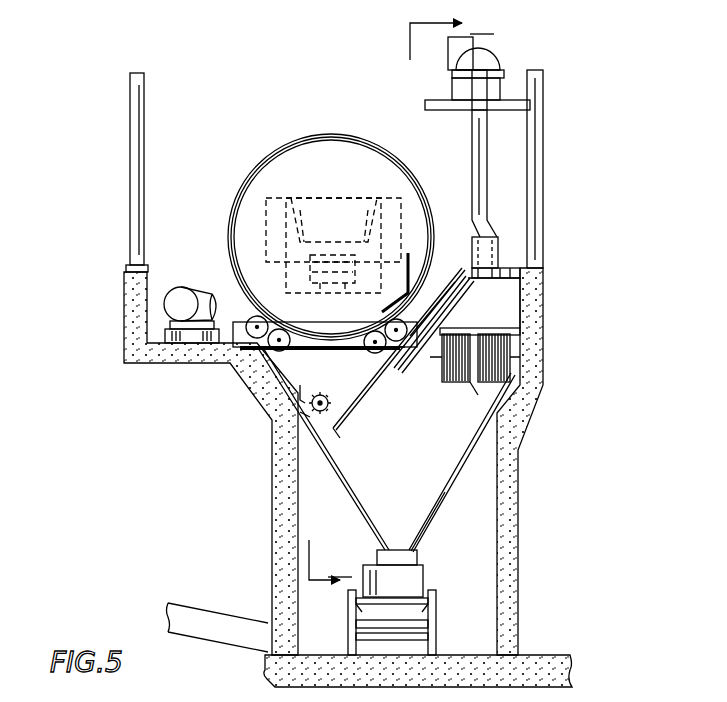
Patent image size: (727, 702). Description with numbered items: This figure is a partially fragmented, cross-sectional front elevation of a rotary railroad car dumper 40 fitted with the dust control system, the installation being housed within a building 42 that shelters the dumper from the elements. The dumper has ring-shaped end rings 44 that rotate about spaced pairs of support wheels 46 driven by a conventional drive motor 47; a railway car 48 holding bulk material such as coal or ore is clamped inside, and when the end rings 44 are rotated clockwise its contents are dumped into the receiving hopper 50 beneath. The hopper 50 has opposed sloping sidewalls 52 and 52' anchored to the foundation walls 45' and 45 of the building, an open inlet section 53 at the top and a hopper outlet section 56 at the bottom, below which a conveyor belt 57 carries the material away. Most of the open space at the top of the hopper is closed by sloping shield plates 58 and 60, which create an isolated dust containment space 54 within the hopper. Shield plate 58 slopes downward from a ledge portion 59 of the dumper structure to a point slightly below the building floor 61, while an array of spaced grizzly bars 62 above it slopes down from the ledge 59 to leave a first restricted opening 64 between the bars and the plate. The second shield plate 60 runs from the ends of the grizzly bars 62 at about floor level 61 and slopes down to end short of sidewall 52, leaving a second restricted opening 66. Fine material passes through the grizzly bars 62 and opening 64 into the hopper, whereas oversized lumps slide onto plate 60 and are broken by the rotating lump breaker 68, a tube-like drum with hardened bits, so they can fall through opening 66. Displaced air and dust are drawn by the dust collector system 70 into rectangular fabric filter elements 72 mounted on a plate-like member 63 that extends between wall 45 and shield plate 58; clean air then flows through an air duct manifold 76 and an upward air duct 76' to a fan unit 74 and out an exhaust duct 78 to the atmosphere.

The rotary railroad car dumper 40 is at (276, 160).
The building 42 is at (126, 165).
The end rings 44 is at (295, 140).
The foundation wall 45 is at (425, 477).
The foundation wall 45' is at (211, 463).
The support wheels 46 is at (242, 312).
The drive motor 47 is at (181, 287).
The railway car 48 is at (338, 205).
The receiving hopper 50 is at (448, 507).
The sloping sidewall 52 is at (323, 448).
The sloping sidewall 52' is at (494, 462).
The open inlet section 53 is at (356, 391).
The dust containment space 54 is at (421, 468).
The hopper outlet section 56 is at (403, 573).
The conveyor belt 57 is at (358, 582).
The shield plate 58 is at (400, 368).
The ledge portion 59 is at (527, 268).
The second shield plate 60 is at (348, 412).
The building floor 61 is at (306, 348).
The grizzly bars 62 is at (468, 279).
The plate-like member 63 is at (513, 358).
The first restricted opening 64 is at (410, 367).
The second restricted opening 66 is at (320, 430).
The lump breaker 68 is at (312, 403).
The dust collector system 70 is at (468, 222).
The fabric filter elements 72 is at (478, 383).
The fan unit 74 is at (498, 72).
The air duct manifold 76 is at (492, 303).
The air duct 76' is at (456, 108).
The exhaust duct 78 is at (454, 60).